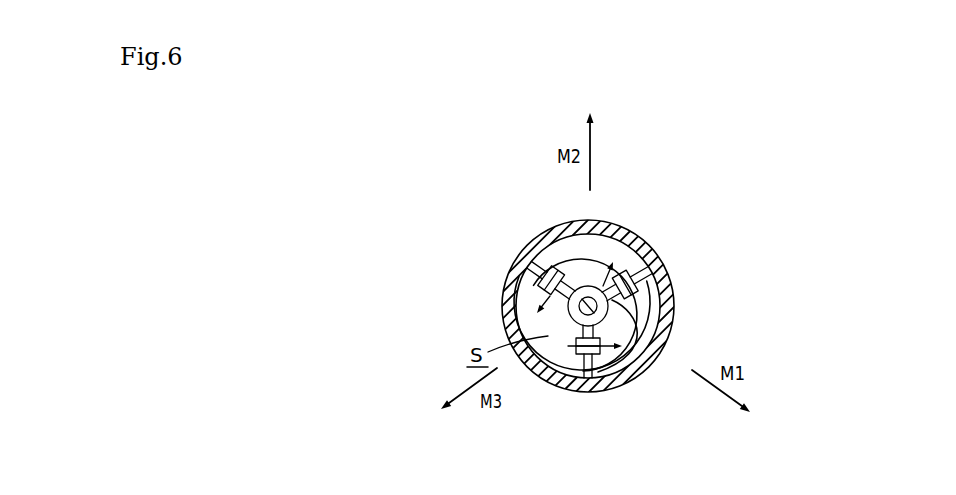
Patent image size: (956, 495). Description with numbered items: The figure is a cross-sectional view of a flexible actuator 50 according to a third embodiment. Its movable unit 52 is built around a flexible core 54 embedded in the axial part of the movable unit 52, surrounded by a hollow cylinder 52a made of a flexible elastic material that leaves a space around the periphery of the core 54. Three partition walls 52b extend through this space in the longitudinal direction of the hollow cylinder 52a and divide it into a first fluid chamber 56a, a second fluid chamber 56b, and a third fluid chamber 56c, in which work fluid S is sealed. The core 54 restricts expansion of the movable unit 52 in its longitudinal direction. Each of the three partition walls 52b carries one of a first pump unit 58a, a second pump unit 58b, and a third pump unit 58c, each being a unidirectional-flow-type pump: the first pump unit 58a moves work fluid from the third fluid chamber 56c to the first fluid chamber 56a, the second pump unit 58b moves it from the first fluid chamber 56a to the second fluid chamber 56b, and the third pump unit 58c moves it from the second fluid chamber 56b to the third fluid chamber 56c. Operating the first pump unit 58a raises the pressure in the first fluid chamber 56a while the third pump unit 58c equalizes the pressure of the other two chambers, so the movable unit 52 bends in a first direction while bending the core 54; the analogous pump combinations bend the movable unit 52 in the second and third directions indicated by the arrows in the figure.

The flexible actuator 50 is at (511, 243).
The movable unit 52 is at (625, 214).
The hollow cylinder 52a is at (656, 267).
The partition walls 52b is at (560, 233).
The flexible core 54 is at (631, 372).
The first fluid chamber 56a is at (650, 340).
The second fluid chamber 56b is at (650, 247).
The third fluid chamber 56c is at (545, 325).
The first pump unit 58a is at (575, 392).
The second pump unit 58b is at (646, 290).
The third pump unit 58c is at (538, 278).